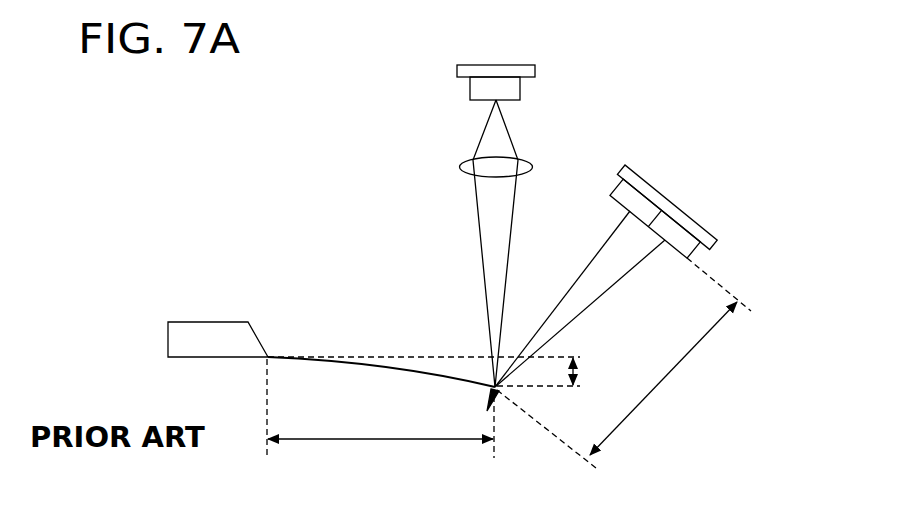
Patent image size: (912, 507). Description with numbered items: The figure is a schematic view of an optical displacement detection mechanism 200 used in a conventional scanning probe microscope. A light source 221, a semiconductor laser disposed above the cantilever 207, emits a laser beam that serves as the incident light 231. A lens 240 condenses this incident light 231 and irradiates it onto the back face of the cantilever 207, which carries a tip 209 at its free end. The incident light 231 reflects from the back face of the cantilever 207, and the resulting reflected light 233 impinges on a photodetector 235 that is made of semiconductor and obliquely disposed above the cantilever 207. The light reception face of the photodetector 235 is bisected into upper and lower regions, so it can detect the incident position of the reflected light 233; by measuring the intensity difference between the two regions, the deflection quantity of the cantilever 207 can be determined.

The optical displacement detection mechanism 200 is at (732, 117).
The light source 221 is at (536, 72).
The lens 240 is at (532, 164).
The incident light 231 is at (483, 261).
The photodetector 235 is at (705, 228).
The reflected light 233 is at (597, 302).
The cantilever 207 is at (360, 367).
The tip 209 is at (497, 393).